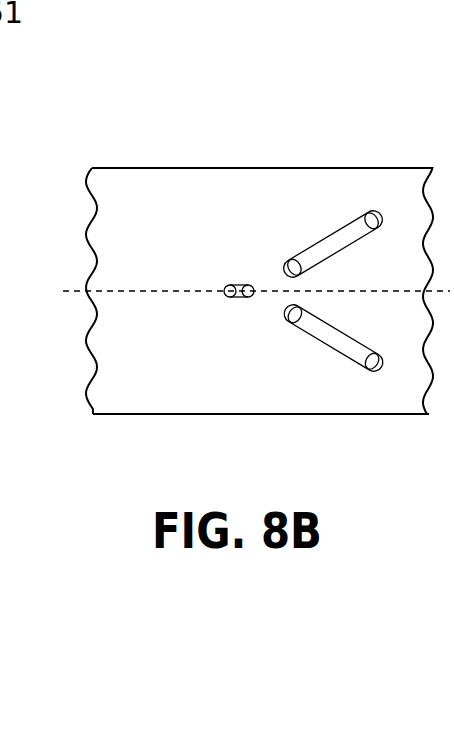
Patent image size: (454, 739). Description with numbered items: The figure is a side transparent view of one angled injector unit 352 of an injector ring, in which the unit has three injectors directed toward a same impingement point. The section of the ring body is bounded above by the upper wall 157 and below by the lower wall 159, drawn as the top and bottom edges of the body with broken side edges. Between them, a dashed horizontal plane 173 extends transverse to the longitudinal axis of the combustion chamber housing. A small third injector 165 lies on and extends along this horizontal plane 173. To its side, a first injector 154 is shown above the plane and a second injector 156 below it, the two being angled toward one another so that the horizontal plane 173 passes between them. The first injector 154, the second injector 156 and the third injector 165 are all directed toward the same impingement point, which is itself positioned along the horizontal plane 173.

The angled injector unit 352 is at (388, 157).
The upper wall 157 is at (120, 167).
The lower wall 159 is at (137, 415).
The horizontal plane 173 is at (82, 293).
The third injector 165 is at (240, 283).
The first injector 154 is at (330, 242).
The second injector 156 is at (325, 336).